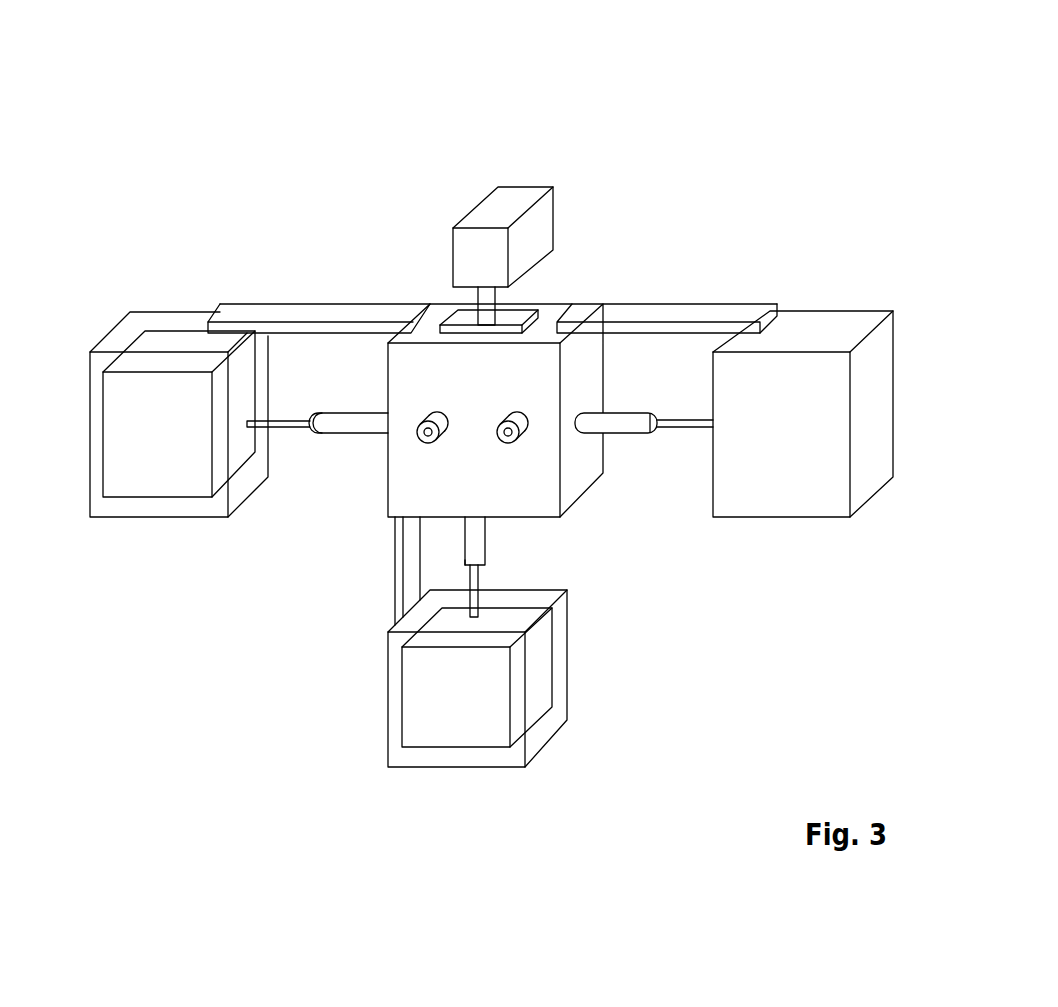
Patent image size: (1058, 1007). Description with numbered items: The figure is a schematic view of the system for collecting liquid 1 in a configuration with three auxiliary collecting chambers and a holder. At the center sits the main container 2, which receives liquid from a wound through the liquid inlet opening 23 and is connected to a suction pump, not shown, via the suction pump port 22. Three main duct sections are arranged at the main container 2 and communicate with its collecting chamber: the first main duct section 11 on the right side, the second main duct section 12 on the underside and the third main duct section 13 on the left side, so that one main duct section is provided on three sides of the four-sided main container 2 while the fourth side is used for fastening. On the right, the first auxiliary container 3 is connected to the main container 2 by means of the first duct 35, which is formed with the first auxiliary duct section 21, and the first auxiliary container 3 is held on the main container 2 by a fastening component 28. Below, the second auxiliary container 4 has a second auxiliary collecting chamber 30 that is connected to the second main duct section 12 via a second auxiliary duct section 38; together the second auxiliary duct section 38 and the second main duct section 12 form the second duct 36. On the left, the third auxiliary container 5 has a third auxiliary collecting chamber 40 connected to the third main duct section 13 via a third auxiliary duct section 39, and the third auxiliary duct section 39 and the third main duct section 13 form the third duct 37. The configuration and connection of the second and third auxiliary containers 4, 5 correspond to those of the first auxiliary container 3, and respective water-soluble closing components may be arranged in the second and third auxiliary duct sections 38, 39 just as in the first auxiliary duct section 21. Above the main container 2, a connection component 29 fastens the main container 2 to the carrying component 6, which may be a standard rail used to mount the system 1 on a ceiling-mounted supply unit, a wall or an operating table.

The system for collecting liquid 1 is at (697, 158).
The main container 2 is at (567, 494).
The first auxiliary container 3 is at (877, 405).
The second auxiliary container 4 is at (555, 718).
The third auxiliary container 5 is at (162, 322).
The carrying component 6 is at (510, 202).
The first main duct section 11 is at (613, 423).
The second main duct section 12 is at (475, 543).
The third main duct section 13 is at (347, 418).
The first auxiliary duct section 21 is at (673, 430).
The suction pump port 22 is at (432, 445).
The liquid inlet opening 23 is at (510, 445).
The fastening component 28 is at (332, 307).
The connection component 29 is at (492, 297).
The second auxiliary collecting chamber 30 is at (428, 663).
The first duct 35 is at (650, 420).
The second duct 36 is at (465, 563).
The third duct 37 is at (327, 437).
The second auxiliary duct section 38 is at (480, 580).
The third auxiliary duct section 39 is at (277, 427).
The third auxiliary collecting chamber 40 is at (145, 457).